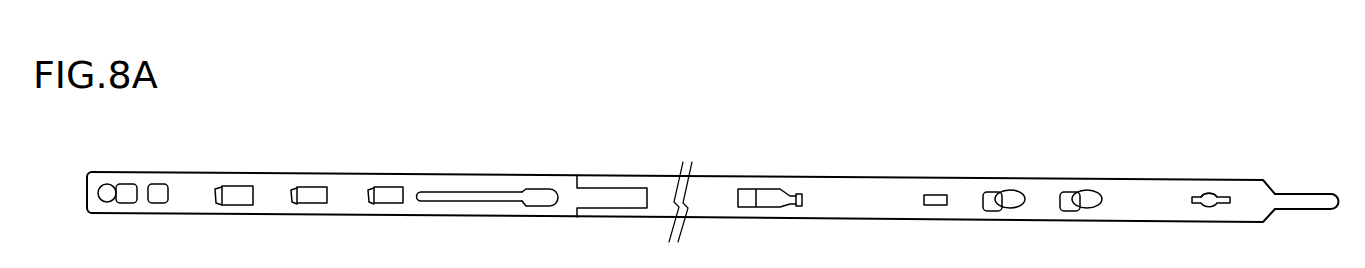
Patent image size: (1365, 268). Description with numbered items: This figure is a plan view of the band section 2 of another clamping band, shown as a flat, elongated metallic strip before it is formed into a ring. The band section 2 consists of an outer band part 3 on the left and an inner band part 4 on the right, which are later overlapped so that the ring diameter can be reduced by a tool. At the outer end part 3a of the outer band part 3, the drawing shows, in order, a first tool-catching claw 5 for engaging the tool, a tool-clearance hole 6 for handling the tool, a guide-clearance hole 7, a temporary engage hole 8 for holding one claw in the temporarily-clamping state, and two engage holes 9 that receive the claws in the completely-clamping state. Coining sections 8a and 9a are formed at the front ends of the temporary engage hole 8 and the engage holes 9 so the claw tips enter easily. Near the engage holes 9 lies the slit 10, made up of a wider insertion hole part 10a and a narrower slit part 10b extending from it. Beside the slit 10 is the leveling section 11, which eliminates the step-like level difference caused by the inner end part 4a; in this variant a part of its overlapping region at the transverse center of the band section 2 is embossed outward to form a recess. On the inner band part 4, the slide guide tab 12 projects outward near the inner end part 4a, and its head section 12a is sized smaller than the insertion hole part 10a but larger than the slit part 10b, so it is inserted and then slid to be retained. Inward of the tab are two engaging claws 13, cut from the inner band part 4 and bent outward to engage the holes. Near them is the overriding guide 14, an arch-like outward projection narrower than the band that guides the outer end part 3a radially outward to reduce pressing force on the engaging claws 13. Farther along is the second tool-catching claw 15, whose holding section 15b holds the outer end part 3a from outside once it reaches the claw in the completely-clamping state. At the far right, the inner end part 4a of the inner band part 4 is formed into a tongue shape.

The band section 2 is at (713, 178).
The outer band part 3 is at (189, 180).
The outer end part 3a is at (90, 181).
The inner band part 4 is at (1142, 180).
The inner end part 4a is at (1331, 193).
The first tool-catching claw 5 is at (107, 184).
The tool-clearance hole 6 is at (128, 185).
The guide-clearance hole 7 is at (157, 185).
The temporary engage hole 8 is at (237, 193).
The coining section 8a is at (218, 189).
The engage holes 9 is at (378, 188).
The coining sections 9a is at (370, 205).
The slit 10 is at (546, 140).
The insertion hole part 10a is at (528, 191).
The slit part 10b is at (483, 193).
The leveling section 11 is at (614, 183).
The slide guide tab 12 is at (1197, 198).
The head section 12a is at (1210, 195).
The engaging claws 13 is at (1085, 192).
The overriding guide 14 is at (930, 195).
The second tool-catching claw 15 is at (762, 195).
The holding section 15b is at (797, 200).